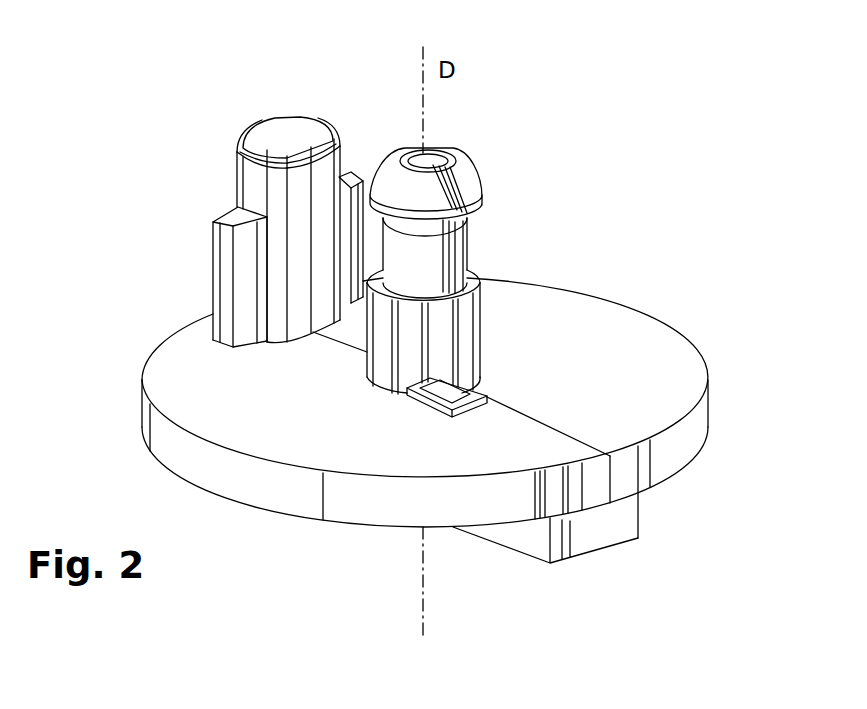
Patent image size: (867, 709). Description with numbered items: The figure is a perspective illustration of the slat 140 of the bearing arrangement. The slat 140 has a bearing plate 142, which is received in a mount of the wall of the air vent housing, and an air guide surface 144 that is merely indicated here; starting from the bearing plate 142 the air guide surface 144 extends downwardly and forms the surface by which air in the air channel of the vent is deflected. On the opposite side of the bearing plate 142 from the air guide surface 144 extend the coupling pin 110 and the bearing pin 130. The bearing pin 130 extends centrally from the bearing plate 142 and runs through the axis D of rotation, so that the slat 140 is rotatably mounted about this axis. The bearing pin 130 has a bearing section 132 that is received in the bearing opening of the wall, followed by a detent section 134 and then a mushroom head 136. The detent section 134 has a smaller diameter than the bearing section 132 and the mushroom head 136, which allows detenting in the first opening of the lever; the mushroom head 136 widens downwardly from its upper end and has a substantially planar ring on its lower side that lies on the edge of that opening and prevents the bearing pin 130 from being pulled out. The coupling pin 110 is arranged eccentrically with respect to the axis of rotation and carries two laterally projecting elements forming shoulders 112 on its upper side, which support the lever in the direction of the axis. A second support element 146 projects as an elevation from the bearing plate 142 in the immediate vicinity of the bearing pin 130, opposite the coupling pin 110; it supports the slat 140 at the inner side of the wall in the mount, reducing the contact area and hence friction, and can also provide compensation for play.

The coupling pin 110 is at (243, 119).
The shoulder 112 is at (230, 213).
The bearing pin 130 is at (530, 195).
The bearing section 132 is at (487, 328).
The detent section 134 is at (468, 250).
The mushroom head 136 is at (463, 178).
The slat 140 is at (708, 168).
The bearing plate 142 is at (665, 352).
The air guide surface 144 is at (527, 535).
The second support element 146 is at (430, 393).